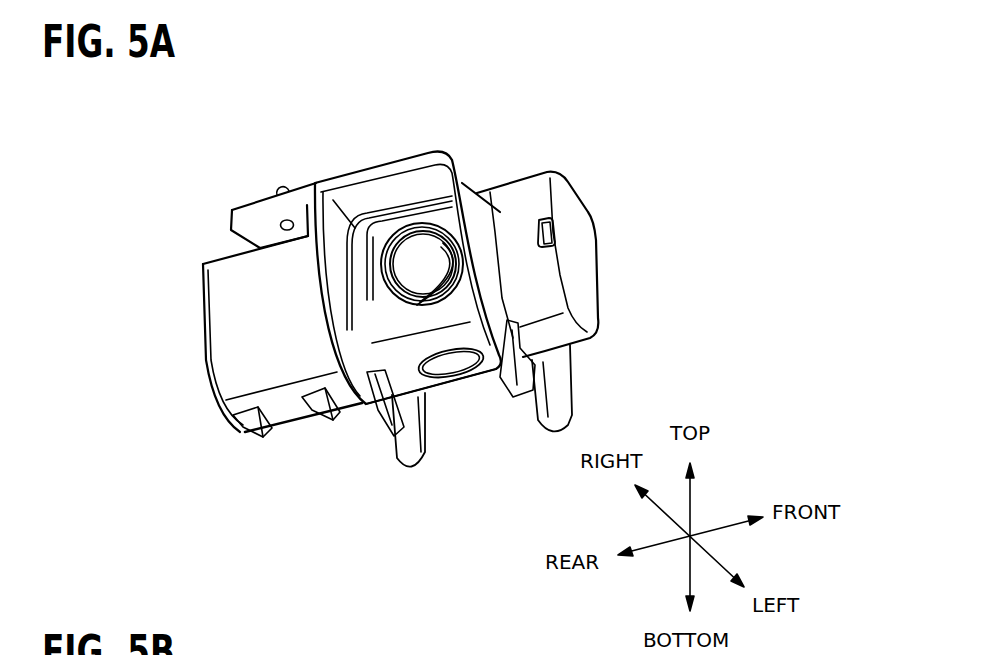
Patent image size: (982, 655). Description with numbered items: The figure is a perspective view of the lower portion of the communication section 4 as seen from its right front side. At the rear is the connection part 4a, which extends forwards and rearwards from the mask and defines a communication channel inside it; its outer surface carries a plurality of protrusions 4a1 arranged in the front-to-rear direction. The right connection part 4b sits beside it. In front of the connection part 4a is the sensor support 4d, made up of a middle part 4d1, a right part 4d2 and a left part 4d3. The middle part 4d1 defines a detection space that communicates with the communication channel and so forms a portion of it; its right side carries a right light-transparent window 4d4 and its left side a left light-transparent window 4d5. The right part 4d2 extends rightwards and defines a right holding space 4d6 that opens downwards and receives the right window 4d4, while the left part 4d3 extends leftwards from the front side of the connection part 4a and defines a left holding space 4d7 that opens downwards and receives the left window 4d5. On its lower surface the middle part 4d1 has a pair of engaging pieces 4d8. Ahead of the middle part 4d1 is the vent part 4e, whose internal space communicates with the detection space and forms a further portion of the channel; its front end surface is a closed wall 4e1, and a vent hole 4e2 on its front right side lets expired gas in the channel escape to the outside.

The communication section 4 is at (446, 281).
The connection part 4a is at (222, 343).
The protrusions 4a1 is at (258, 440).
The right connection part 4b is at (240, 213).
The sensor support 4d is at (471, 281).
The middle part 4d1 is at (397, 325).
The right part 4d2 is at (410, 157).
The left part 4d3 is at (573, 380).
The right light-transparent window 4d4 is at (388, 252).
The left light-transparent window 4d5 is at (445, 260).
The right holding space 4d6 is at (334, 228).
The left holding space 4d7 is at (500, 419).
The engaging pieces 4d8 is at (380, 418).
The vent part 4e is at (584, 251).
The closed wall 4e1 is at (588, 252).
The vent hole 4e2 is at (549, 217).